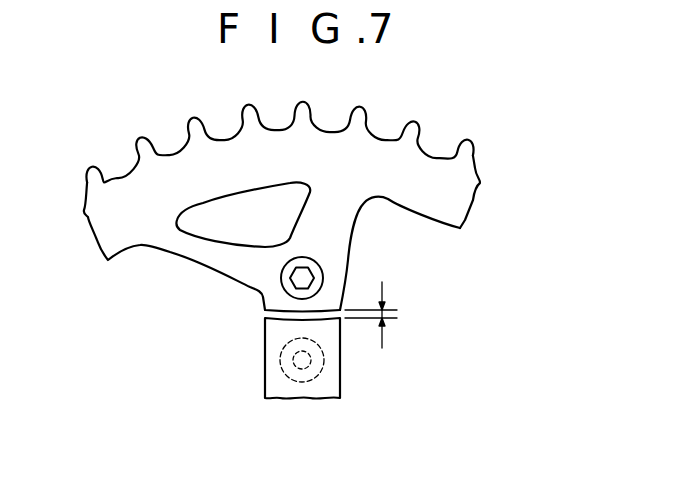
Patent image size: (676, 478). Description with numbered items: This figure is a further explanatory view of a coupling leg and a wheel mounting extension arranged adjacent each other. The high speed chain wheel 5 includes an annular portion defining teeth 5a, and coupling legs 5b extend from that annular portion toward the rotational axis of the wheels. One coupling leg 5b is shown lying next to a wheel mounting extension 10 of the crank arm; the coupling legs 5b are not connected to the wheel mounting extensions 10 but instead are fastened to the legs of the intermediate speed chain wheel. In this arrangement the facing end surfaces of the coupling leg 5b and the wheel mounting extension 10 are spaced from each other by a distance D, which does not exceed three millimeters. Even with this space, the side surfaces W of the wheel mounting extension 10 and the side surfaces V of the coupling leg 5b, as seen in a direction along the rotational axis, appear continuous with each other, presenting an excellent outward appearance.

The high speed chain wheel 5 is at (318, 207).
The teeth 5a is at (472, 150).
The coupling legs 5b is at (338, 250).
The wheel mounting extension 10 is at (308, 358).
The side surfaces V is at (260, 295).
The side surfaces W is at (262, 347).
The distance D is at (384, 315).